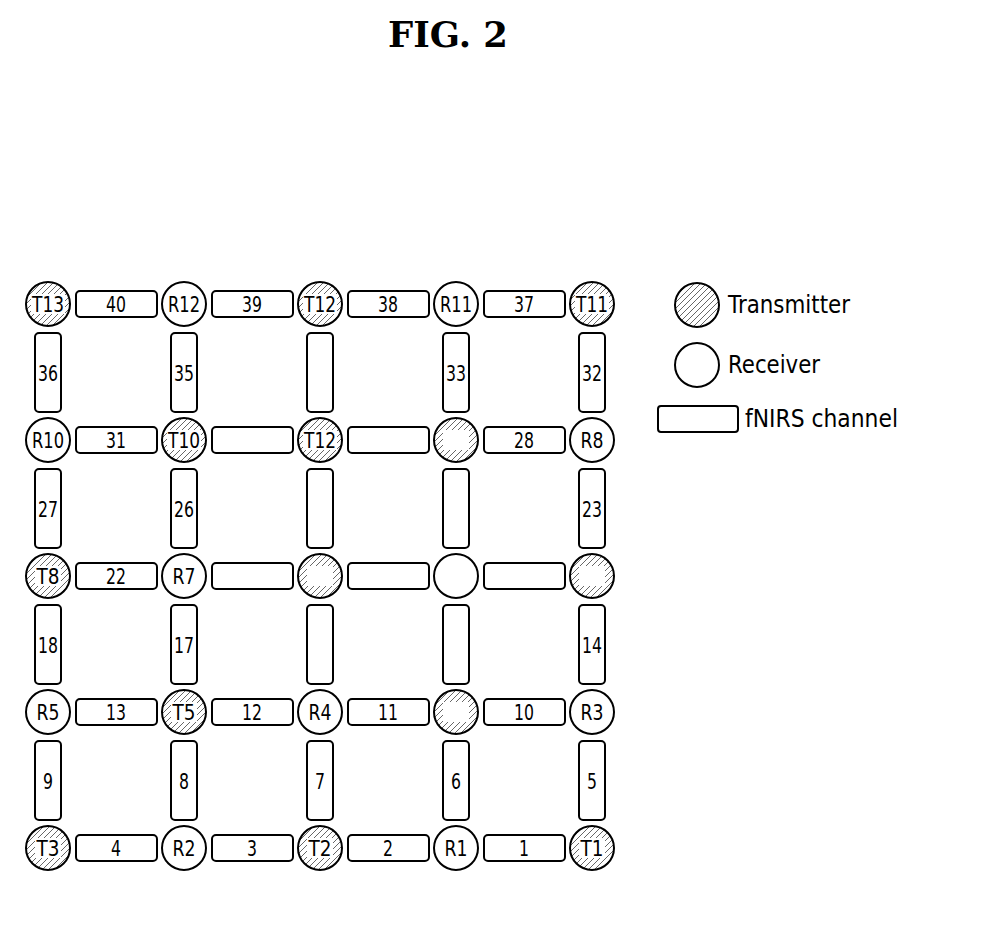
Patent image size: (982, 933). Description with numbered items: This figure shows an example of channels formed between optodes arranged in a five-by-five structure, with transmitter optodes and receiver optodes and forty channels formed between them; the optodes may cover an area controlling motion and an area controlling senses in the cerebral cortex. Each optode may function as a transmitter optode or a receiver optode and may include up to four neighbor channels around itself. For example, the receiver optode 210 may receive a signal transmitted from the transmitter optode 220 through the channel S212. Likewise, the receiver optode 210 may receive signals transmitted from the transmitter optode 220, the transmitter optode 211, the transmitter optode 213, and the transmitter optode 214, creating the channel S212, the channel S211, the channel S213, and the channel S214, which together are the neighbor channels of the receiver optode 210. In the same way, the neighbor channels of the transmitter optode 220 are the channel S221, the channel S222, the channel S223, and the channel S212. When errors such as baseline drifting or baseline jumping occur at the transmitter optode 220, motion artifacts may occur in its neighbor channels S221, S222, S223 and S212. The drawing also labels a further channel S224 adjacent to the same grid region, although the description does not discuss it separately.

The optode of T9 211 is at (468, 423).
The optode of T6 213 is at (615, 576).
The optode of R6 210 is at (438, 592).
The optode of T7 220 is at (304, 594).
The optode of T4 214 is at (443, 728).
The channel of CH24 S211 is at (470, 484).
The channel of CH20 S212 is at (388, 562).
The channel of CH19 S213 is at (524, 562).
The channel of CH15 S214 is at (470, 643).
The channel of CH25 S221 is at (334, 484).
The channel of CH21 S222 is at (388, 426).
The channel of CH16 S223 is at (252, 426).
The fNIRS channel 34 S224 is at (334, 349).